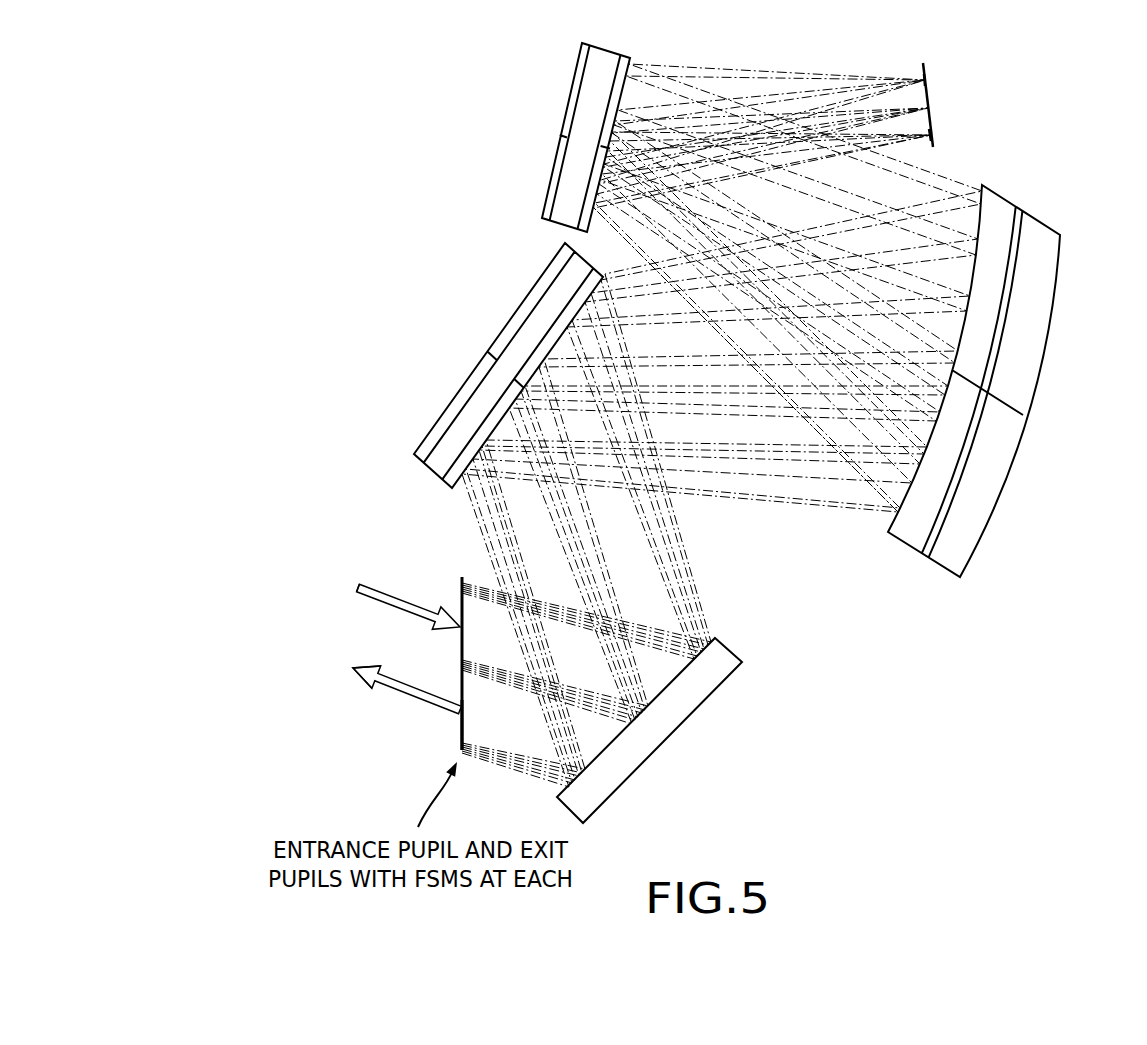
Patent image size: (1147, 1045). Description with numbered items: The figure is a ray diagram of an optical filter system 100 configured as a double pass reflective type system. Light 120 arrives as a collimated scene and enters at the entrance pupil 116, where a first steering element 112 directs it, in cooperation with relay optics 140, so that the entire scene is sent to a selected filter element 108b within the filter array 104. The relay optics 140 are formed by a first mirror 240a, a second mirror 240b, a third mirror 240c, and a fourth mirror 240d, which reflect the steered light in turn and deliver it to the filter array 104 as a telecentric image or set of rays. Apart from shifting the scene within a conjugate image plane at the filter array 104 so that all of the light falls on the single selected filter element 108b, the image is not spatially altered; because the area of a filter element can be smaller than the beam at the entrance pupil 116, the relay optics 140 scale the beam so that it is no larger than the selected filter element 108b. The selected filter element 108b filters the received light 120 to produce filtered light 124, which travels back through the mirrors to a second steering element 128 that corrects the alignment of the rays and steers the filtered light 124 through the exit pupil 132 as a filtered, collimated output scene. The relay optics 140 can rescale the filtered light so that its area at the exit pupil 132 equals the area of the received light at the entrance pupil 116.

The optical filter system 100 is at (372, 100).
The filter array 104 is at (934, 112).
The filter element 108b is at (925, 80).
The first steering element 112 is at (455, 597).
The entrance pupil 116 is at (463, 578).
The received light 120 is at (363, 585).
The filtered light 124 is at (370, 683).
The second steering element 128 is at (462, 717).
The exit pupil 132 is at (458, 735).
The relay optics 140 is at (947, 617).
The first mirror 240a is at (658, 728).
The second mirror 240b is at (527, 347).
The third mirror 240c is at (1018, 382).
The fourth mirror 240d is at (576, 181).